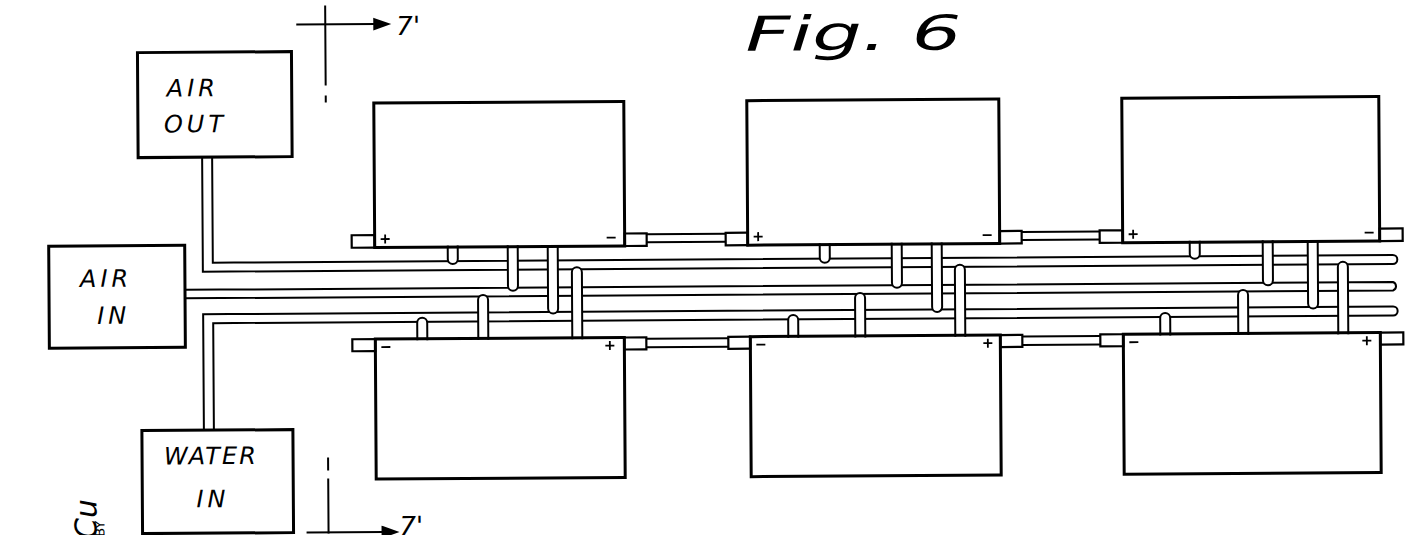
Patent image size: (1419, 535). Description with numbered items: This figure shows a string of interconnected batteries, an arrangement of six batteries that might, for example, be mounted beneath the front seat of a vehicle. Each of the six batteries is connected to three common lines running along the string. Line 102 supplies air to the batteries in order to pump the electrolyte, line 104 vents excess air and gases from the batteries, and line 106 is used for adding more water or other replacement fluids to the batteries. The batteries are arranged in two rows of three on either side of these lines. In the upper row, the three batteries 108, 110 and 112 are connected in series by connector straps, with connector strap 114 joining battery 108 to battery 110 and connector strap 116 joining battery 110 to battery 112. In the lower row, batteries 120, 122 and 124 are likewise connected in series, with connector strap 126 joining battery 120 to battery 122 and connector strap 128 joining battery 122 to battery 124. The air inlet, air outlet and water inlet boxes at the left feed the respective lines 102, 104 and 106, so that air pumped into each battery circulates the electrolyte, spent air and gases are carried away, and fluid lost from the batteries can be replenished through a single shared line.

The line 102 is at (302, 266).
The line 104 is at (333, 264).
The line 106 is at (316, 318).
The battery 108 is at (534, 106).
The battery 110 is at (859, 108).
The battery 112 is at (1265, 104).
The connector strap 114 is at (697, 234).
The connector strap 116 is at (1083, 204).
The battery 120 is at (526, 460).
The battery 122 is at (866, 460).
The battery 124 is at (1200, 461).
The connector strap 126 is at (676, 349).
The connector strap 128 is at (1063, 345).